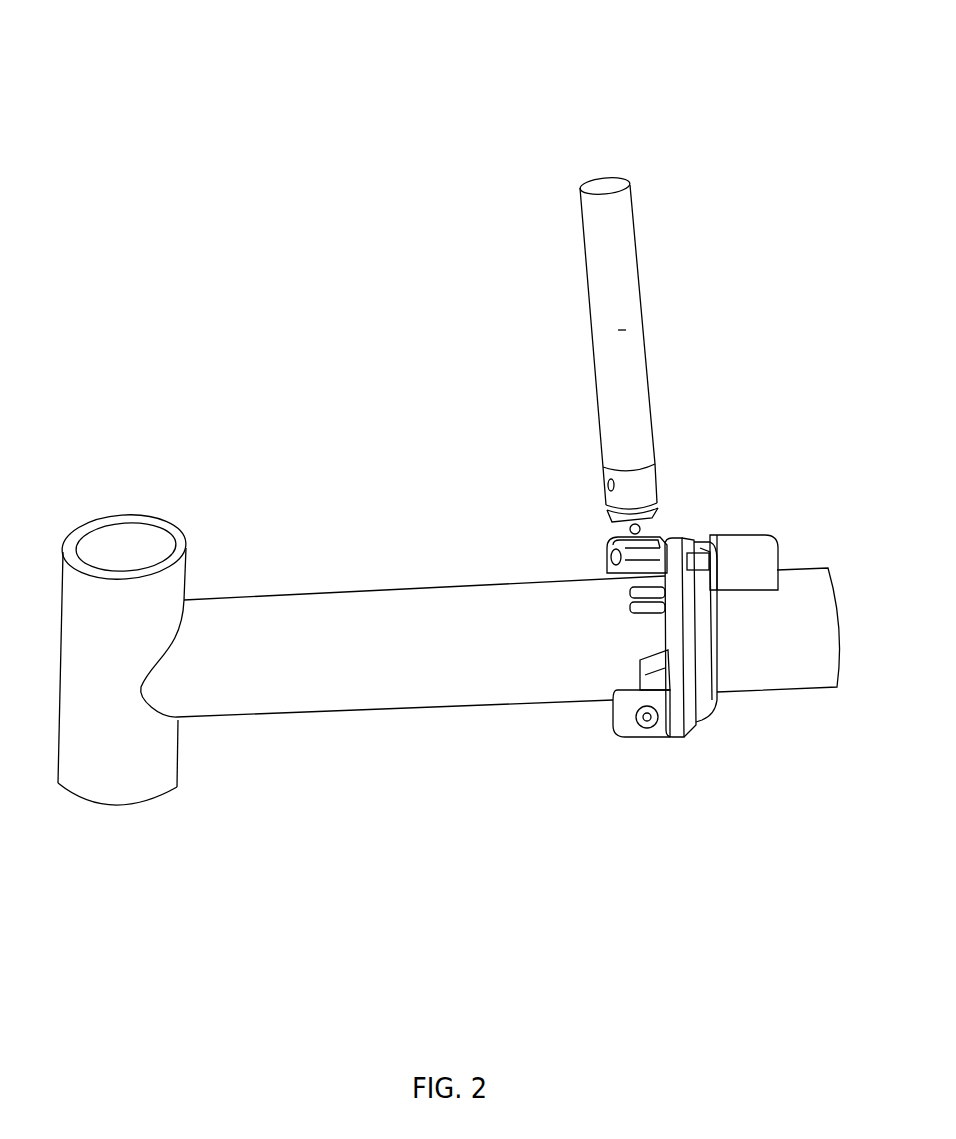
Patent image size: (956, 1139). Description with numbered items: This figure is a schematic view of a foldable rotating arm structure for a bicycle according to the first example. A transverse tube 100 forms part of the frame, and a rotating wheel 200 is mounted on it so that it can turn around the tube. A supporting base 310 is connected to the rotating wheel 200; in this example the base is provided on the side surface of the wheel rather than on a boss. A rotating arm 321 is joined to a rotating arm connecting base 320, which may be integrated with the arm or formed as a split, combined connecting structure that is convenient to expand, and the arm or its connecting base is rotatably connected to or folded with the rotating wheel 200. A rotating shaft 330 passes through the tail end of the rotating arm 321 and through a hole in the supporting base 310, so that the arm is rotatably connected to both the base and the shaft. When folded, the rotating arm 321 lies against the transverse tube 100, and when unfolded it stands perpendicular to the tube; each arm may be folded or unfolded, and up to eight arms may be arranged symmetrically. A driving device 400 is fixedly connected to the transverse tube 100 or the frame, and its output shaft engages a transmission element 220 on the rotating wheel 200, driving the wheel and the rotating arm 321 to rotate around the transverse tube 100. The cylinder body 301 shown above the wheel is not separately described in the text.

The transverse tube 100 is at (230, 670).
The rotating wheel 200 is at (685, 597).
The transmission element 220 is at (700, 597).
The cylinder body 301 is at (642, 562).
The supporting base 310 is at (652, 573).
The rotating arm connecting base 320 is at (633, 530).
The rotating arm 321 is at (622, 343).
The rotating shaft 330 is at (673, 650).
The driving device 400 is at (765, 553).